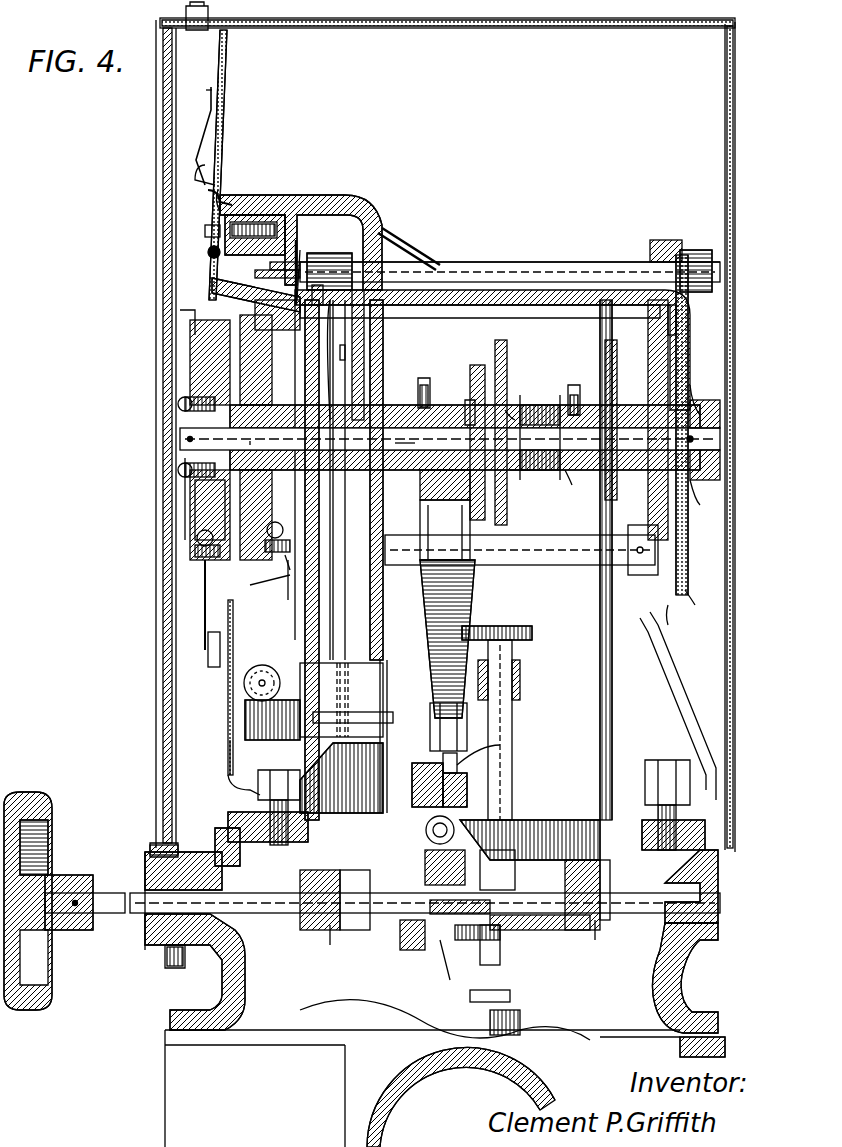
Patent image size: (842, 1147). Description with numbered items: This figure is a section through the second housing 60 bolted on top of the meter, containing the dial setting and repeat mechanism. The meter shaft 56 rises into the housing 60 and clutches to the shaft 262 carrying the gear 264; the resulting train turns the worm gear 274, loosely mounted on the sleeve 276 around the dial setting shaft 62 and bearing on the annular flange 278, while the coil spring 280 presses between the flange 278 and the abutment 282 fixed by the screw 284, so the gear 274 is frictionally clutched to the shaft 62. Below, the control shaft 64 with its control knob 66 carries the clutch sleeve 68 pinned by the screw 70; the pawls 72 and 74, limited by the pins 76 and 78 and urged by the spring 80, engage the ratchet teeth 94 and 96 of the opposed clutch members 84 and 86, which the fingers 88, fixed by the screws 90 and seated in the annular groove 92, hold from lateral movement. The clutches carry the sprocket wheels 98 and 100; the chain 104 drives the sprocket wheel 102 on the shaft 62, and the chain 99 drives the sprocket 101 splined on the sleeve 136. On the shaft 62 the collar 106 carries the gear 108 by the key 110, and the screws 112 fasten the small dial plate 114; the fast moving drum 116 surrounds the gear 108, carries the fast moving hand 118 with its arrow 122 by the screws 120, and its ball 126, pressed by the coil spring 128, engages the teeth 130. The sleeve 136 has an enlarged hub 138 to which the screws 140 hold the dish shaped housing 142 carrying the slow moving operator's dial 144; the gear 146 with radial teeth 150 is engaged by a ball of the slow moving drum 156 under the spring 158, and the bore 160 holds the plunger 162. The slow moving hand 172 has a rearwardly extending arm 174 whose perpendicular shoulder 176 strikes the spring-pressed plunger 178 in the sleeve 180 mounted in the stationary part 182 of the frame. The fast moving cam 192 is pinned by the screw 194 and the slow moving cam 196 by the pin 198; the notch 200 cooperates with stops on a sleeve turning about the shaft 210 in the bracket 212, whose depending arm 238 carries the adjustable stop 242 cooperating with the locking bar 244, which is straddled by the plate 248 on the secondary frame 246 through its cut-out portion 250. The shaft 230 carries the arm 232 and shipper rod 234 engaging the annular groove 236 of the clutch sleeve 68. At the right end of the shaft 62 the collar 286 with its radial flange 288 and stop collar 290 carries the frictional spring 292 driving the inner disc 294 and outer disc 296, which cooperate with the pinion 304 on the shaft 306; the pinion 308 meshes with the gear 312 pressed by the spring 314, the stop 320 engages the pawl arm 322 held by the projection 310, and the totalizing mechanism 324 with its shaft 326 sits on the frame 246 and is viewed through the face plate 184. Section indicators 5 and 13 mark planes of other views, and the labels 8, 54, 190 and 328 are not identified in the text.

The base 8 is at (545, 1025).
The section line 13 is at (690, 209).
The cylindrical bore 54 is at (375, 1090).
The meter shaft 56 is at (510, 995).
The second housing 60 is at (220, 993).
The dial setting shaft 62 is at (185, 433).
The control shaft 64 is at (115, 915).
The control knob 66 is at (30, 790).
The clutch sleeve 68 is at (500, 945).
The screw 70 is at (502, 875).
The pawl 72 is at (410, 950).
The pawl 74 is at (540, 935).
The pin 76 is at (442, 969).
The pin 78 is at (480, 912).
The spring 80 is at (482, 959).
The clutch member 84 is at (365, 935).
The clutch member 86 is at (595, 945).
The finger 88 is at (320, 868).
The screw 90 is at (280, 768).
The annular groove 92 is at (310, 930).
The ratchet teeth 94 is at (351, 790).
The ratchet teeth 96 is at (530, 840).
The sprocket wheel 98 is at (317, 948).
The chain 99 is at (340, 636).
The sprocket wheel 100 is at (605, 930).
The sprocket 101 is at (492, 465).
The sprocket wheel 102 is at (608, 345).
The chain 104 is at (612, 712).
The collar 106 is at (185, 458).
The gear 108 is at (200, 504).
The key 110 is at (185, 488).
The screws 112 is at (178, 398).
The small dial plate 114 is at (240, 358).
The fast moving drum 116 is at (235, 560).
The fast moving hand 118 is at (215, 97).
The screws 120 is at (130, 566).
The arrow 122 is at (180, 318).
The ball 126 is at (195, 522).
The coil spring 128 is at (195, 555).
The teeth 130 is at (200, 342).
The sleeve 136 is at (403, 434).
The enlarged hub 138 is at (253, 434).
The screws 140 is at (465, 437).
The dish shaped housing 142 is at (311, 268).
The slow moving operator's dial 144 is at (205, 604).
The gear 146 is at (340, 345).
The radial teeth 150 is at (343, 360).
The slow moving drum 156 is at (270, 564).
The spring 158 is at (285, 580).
The bore 160 is at (292, 282).
The plunger 162 is at (277, 278).
The slow moving hand 172 is at (232, 155).
The rearwardly extending arm 174 is at (205, 228).
The perpendicular shoulder 176 is at (205, 253).
The spring-pressed plunger 178 is at (228, 190).
The sleeve 180 is at (258, 195).
The stationary part 182 is at (308, 196).
The face plate 184 is at (215, 770).
The stop 190 is at (205, 655).
The fast moving cam 192 is at (478, 358).
The screw 194 is at (470, 400).
The slow moving cam 196 is at (415, 517).
The pin 198 is at (424, 378).
The notch 200 is at (440, 742).
The shaft 210 is at (535, 565).
The bracket 212 is at (525, 262).
The shaft 230 is at (470, 870).
The arm 232 is at (452, 820).
The shipper rod 234 is at (433, 825).
The annular groove 236 is at (460, 1010).
The depending arm 238 is at (470, 585).
The adjustable stop 242 is at (467, 725).
The locking bar 244 is at (467, 780).
The secondary frame 246 is at (420, 780).
The plate 248 is at (443, 755).
The cut-out portion 250 is at (500, 745).
The shaft 262 is at (515, 705).
The gear 264 is at (535, 632).
The worm gear 274 is at (505, 355).
The sleeve 276 is at (521, 400).
The annular flange 278 is at (518, 470).
The coil spring 280 is at (540, 400).
The abutment 282 is at (569, 482).
The screw 284 is at (575, 385).
The collar 286 is at (720, 414).
The radial flange 288 is at (640, 518).
The stop collar 290 is at (720, 472).
The frictional spring 292 is at (700, 395).
The inner disc 294 is at (681, 615).
The outer disc 296 is at (700, 600).
The pinion 304 is at (696, 250).
The shaft 306 is at (600, 262).
The pinion 308 is at (337, 250).
The projection 310 is at (660, 245).
The gear 312 is at (305, 595).
The spring 314 is at (350, 300).
The stop 320 is at (676, 330).
The pawl arm 322 is at (690, 300).
The totalizing mechanism 324 is at (272, 660).
The shaft 326 is at (388, 712).
The rack 328 is at (240, 700).
The section line 5 is at (460, 280).